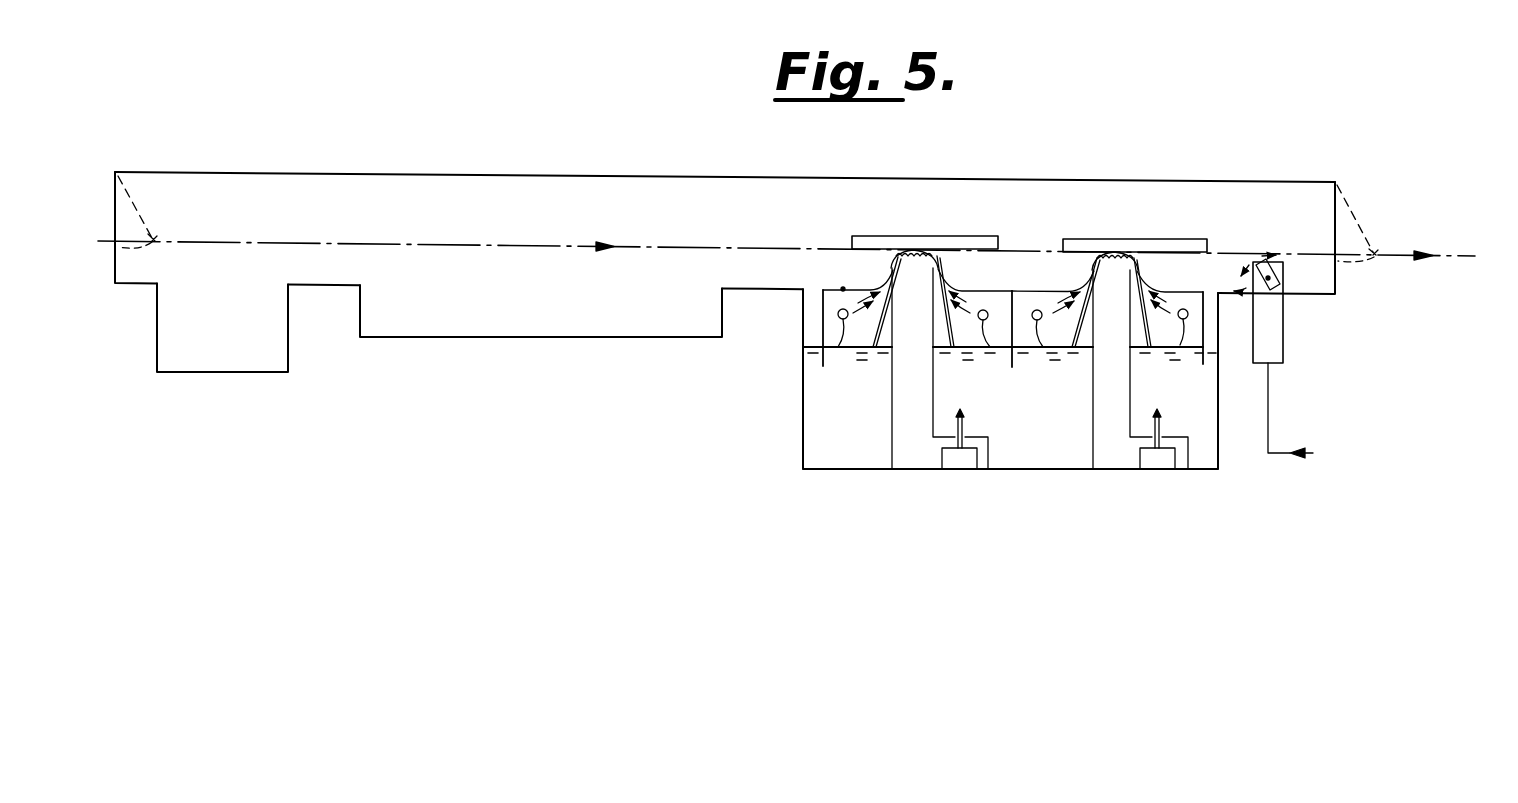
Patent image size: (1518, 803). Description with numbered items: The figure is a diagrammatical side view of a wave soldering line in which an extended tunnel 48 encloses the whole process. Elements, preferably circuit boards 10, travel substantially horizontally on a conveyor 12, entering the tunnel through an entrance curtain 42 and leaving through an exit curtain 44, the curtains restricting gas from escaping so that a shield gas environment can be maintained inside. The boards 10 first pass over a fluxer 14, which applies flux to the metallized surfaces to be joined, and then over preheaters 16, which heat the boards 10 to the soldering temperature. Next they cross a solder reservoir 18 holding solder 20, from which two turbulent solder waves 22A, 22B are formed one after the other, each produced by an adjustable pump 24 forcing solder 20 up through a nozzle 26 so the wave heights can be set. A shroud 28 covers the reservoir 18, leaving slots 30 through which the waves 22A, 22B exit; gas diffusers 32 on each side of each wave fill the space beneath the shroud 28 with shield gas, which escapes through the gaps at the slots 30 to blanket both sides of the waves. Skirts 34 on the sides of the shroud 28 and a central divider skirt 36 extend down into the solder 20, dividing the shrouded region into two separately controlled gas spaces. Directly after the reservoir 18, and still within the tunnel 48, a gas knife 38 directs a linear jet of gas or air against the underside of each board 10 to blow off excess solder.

The circuit boards 10 is at (960, 236).
The conveyor 12 is at (565, 246).
The fluxer 14 is at (230, 372).
The preheaters 16 is at (574, 337).
The solder reservoir 18 is at (803, 414).
The solder 20 is at (1013, 462).
The first solder wave 22A is at (897, 257).
The second solder wave 22B is at (1115, 252).
The solder pump 24 is at (958, 468).
The nozzle 26 is at (892, 420).
The shroud 28 is at (843, 290).
The slots 30 is at (946, 283).
The gas diffusers 32 is at (838, 350).
The skirts 34 is at (823, 325).
The divider skirt 36 is at (1014, 352).
The gas knife 38 is at (1280, 261).
The entrance curtain 42 is at (133, 203).
The exit curtain 44 is at (1350, 210).
The extended tunnel 48 is at (753, 177).